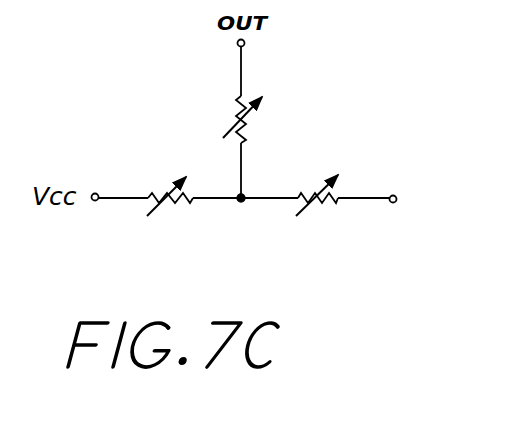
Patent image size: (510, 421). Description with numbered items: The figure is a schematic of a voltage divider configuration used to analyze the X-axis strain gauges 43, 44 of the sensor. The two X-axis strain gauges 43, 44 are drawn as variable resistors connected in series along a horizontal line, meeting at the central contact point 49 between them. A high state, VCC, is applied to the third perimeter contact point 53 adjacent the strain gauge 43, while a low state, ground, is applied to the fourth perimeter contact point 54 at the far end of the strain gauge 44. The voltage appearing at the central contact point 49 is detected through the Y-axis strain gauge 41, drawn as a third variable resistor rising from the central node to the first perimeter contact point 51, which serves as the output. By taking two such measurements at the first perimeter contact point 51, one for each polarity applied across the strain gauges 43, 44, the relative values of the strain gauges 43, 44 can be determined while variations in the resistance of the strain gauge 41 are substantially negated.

The first strain gauge 41 is at (236, 108).
The strain gauge 43 is at (152, 197).
The strain gauge 44 is at (322, 202).
The central contact point 49 is at (243, 196).
The first perimeter contact point 51 is at (245, 43).
The third perimeter contact point 53 is at (93, 203).
The fourth perimeter contact point 54 is at (396, 195).